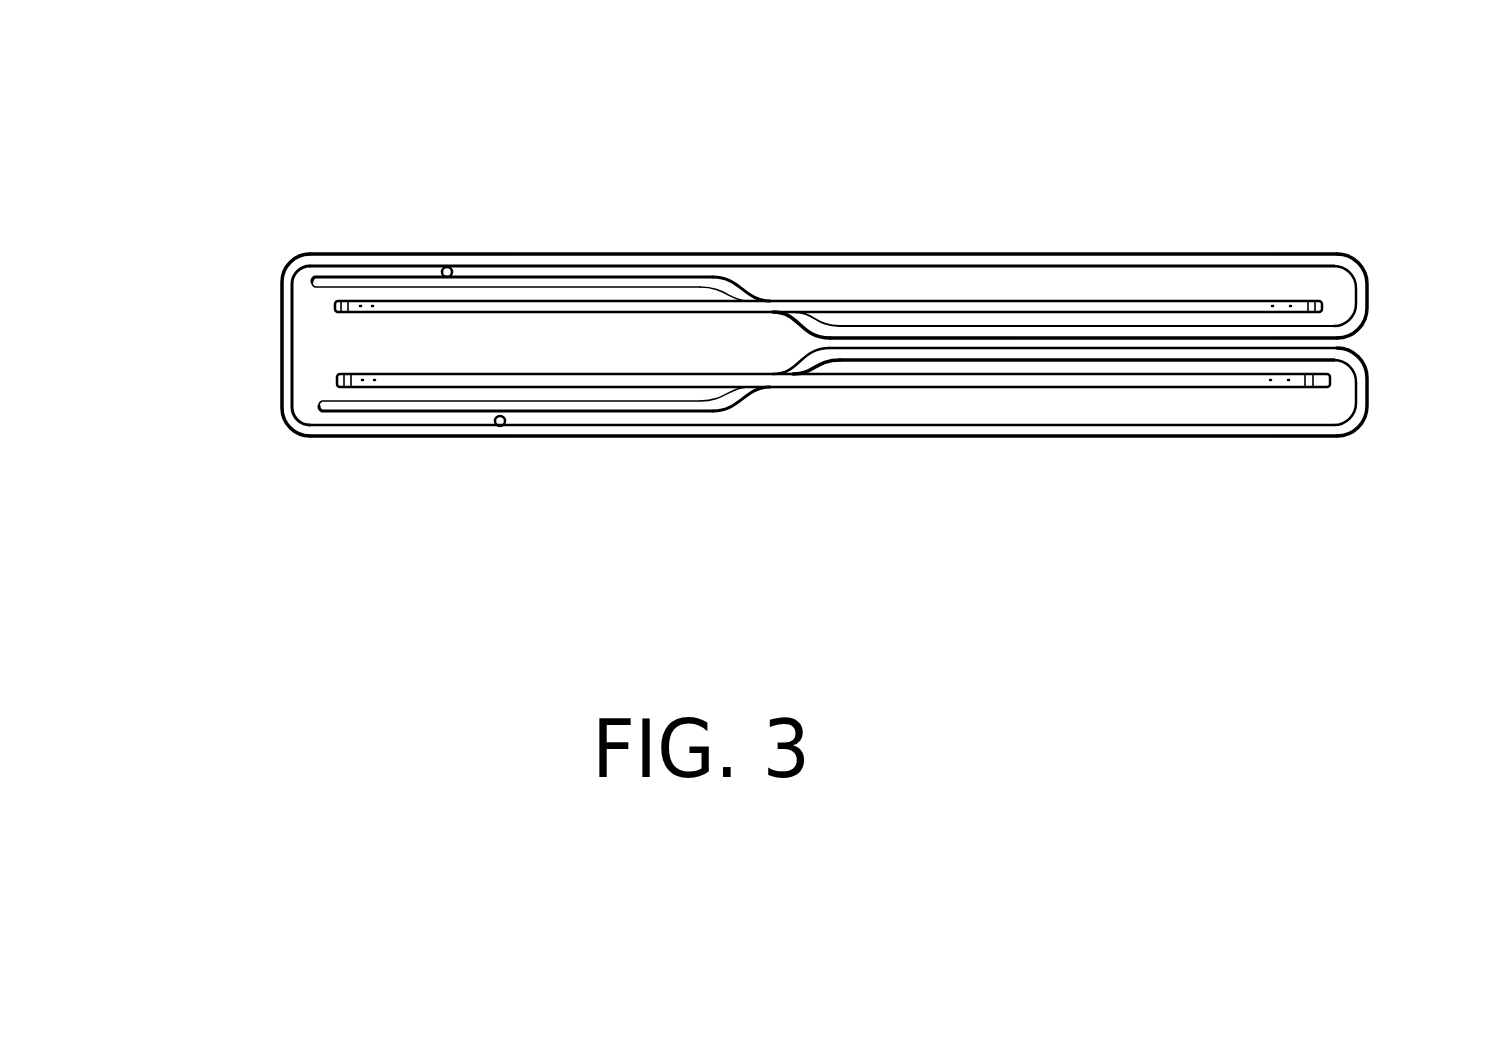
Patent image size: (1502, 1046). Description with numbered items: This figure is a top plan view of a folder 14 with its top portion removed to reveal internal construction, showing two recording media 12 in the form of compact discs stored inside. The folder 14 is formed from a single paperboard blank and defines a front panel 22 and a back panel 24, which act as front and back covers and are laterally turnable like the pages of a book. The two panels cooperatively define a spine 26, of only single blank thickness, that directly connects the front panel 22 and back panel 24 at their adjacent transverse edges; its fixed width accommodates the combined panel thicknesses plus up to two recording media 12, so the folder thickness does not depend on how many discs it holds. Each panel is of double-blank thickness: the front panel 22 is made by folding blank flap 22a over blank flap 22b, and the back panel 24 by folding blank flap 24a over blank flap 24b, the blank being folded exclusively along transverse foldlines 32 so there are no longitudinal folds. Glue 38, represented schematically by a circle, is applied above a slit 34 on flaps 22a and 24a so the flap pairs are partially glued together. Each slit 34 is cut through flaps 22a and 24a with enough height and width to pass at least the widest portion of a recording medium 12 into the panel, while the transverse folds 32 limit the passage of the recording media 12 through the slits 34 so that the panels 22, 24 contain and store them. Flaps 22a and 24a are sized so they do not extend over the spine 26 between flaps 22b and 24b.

The folder 14 is at (592, 184).
The recording medium 12 is at (333, 305).
The front panel 22 is at (1393, 333).
The blank flap 22a is at (709, 272).
The blank flap 22b is at (1140, 252).
The back panel 24 is at (1392, 357).
The blank flap 24a is at (422, 413).
The blank flap 24b is at (651, 440).
The spine 26 is at (283, 327).
The transverse foldline 32 is at (1368, 292).
The slit 34 is at (775, 306).
The glue 38 is at (446, 266).